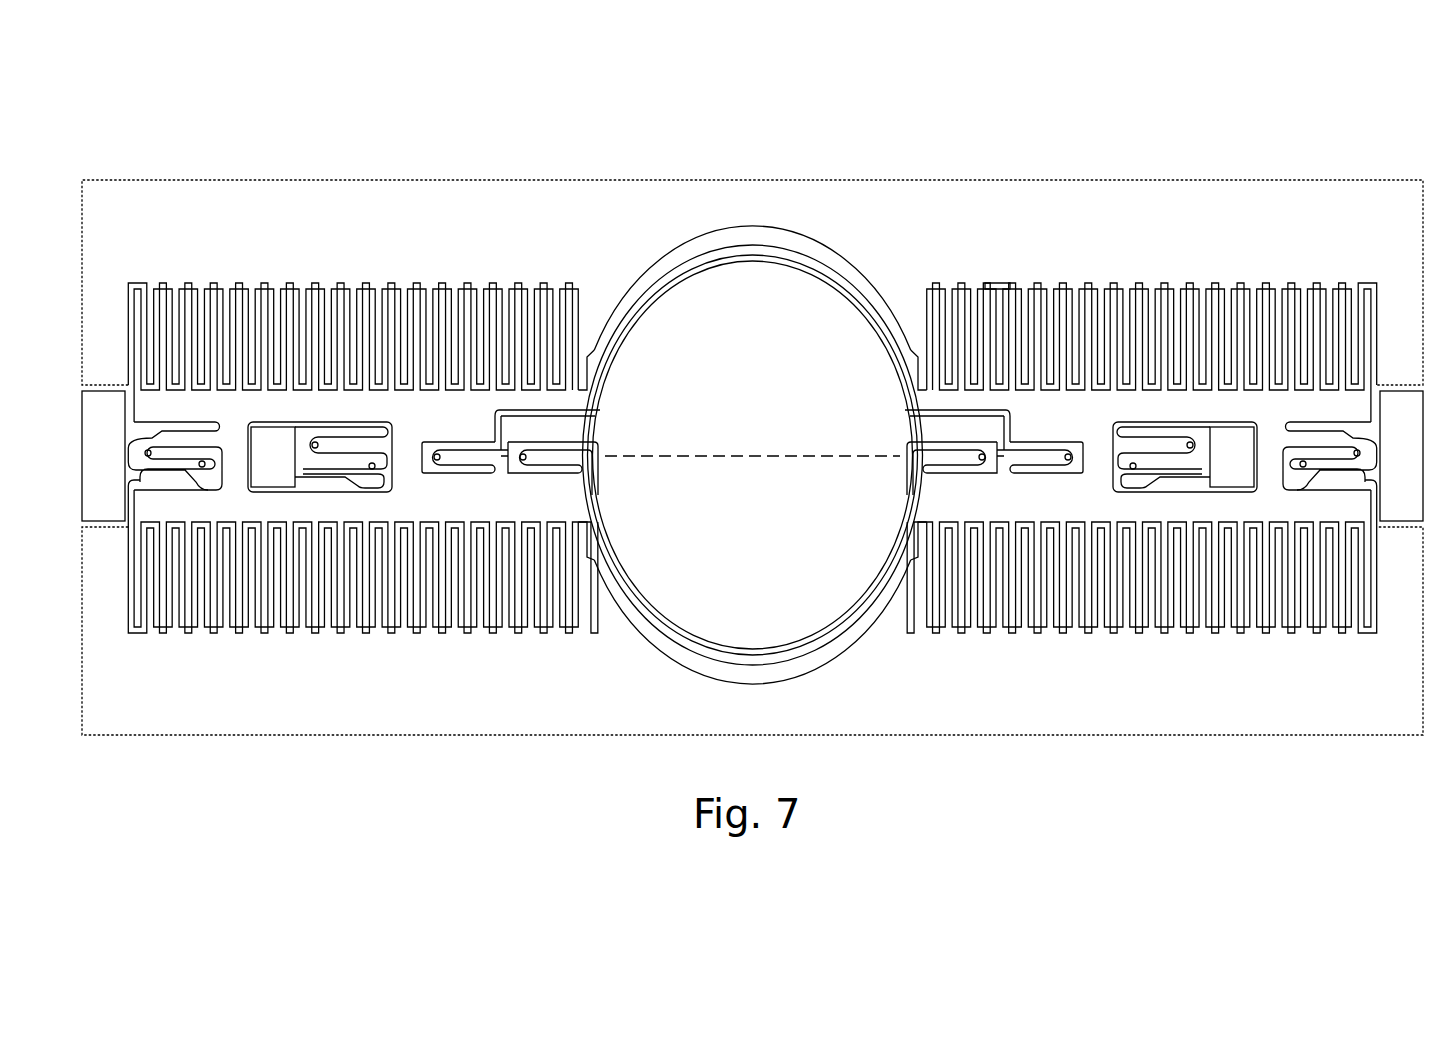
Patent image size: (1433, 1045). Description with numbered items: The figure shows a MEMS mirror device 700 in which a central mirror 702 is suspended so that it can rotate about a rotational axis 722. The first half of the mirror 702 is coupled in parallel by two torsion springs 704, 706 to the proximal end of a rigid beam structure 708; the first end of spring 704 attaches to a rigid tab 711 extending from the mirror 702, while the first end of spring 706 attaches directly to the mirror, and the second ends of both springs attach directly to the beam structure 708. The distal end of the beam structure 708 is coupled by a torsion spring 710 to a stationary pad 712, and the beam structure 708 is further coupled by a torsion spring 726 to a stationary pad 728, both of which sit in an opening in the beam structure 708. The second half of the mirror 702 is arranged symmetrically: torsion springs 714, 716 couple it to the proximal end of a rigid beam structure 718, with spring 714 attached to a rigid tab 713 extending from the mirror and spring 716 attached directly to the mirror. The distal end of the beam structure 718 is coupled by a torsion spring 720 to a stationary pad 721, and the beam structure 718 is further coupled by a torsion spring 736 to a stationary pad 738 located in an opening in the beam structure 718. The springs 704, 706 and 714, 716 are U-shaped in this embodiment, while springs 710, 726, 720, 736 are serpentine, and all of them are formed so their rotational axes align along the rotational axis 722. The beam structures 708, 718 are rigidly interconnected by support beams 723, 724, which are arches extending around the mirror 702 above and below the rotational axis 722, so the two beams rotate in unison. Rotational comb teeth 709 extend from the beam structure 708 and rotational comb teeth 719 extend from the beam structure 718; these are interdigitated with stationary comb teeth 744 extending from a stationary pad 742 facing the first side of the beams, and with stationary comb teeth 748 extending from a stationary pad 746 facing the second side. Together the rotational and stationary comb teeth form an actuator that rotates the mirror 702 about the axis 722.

The MEMS mirror device 700 is at (233, 97).
The mirror 702 is at (780, 398).
The torsion spring 704 is at (435, 466).
The torsion spring 706 is at (523, 466).
The rigid beam structure 708 is at (460, 427).
The rotational comb teeth 709 is at (518, 300).
The torsion spring 710 is at (160, 472).
The rigid tab 711 is at (578, 438).
The stationary pad 712 is at (123, 472).
The rigid tab 713 is at (968, 438).
The torsion spring 714 is at (1068, 466).
The torsion spring 716 is at (978, 466).
The rigid beam structure 718 is at (1085, 427).
The rotational comb teeth 719 is at (987, 298).
The torsion spring 720 is at (1340, 477).
The contact pad 721 is at (1422, 472).
The rotational axis 722 is at (752, 456).
The support beam 723 is at (806, 262).
The support beam 724 is at (832, 635).
The torsion spring 726 is at (335, 477).
The stationary pad 728 is at (294, 470).
The torsion spring 736 is at (1172, 477).
The stationary pad 738 is at (1252, 470).
The stationary pad 742 is at (1201, 247).
The stationary comb teeth 744 is at (1002, 298).
The stationary pad 746 is at (1219, 697).
The stationary comb teeth 748 is at (1048, 627).